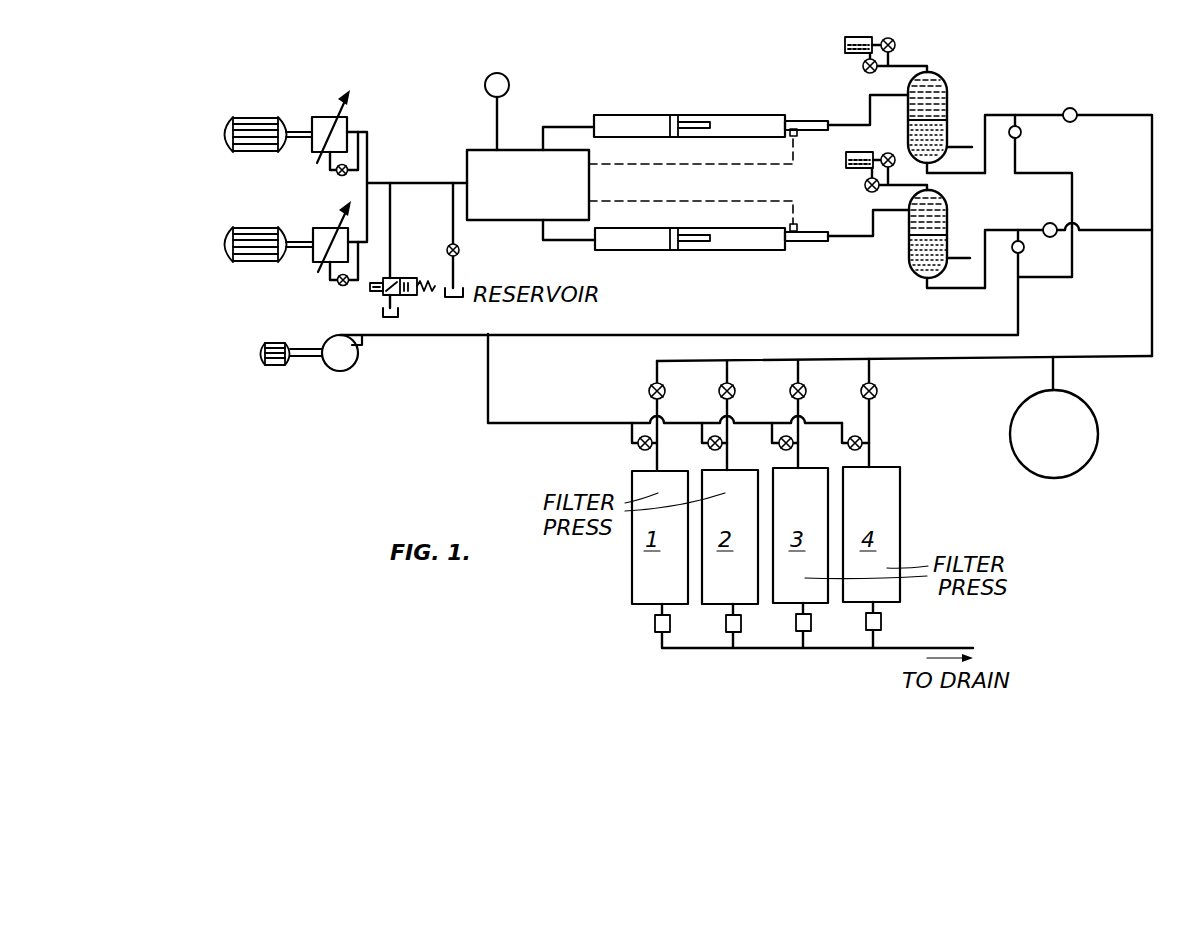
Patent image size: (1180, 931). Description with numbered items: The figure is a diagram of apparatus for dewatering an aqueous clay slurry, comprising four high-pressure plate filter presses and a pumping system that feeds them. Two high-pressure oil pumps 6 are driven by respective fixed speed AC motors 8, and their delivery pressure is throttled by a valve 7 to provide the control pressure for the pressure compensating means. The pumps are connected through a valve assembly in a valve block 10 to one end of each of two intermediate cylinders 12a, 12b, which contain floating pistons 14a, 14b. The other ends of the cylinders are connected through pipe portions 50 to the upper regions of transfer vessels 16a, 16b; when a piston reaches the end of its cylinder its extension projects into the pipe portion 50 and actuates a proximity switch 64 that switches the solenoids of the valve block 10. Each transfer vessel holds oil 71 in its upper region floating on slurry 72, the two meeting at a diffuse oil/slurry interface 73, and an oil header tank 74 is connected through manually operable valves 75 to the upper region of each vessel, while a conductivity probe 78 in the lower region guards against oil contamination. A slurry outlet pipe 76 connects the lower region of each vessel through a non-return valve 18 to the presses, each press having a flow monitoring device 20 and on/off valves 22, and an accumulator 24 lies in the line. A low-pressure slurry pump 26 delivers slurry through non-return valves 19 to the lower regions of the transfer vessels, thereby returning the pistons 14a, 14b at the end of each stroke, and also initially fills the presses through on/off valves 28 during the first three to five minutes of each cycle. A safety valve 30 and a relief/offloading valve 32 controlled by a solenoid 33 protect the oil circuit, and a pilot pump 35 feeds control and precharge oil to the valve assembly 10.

The high-pressure oil pump 6 is at (322, 116).
The throttling valve 7 is at (336, 175).
The fixed speed AC motor 8 is at (255, 140).
The valve block 10 is at (483, 152).
The intermediate cylinder 12a is at (655, 252).
The intermediate cylinder 12b is at (661, 137).
The floating piston 14a is at (678, 252).
The floating piston 14b is at (677, 133).
The transfer vessel 16a is at (942, 207).
The transfer vessel 16b is at (937, 75).
The non-return valve 18 is at (1075, 107).
The non-return valve 19 is at (1023, 131).
The flow monitoring device 20 is at (653, 624).
The on/off valve 22 is at (718, 396).
The accumulator 24 is at (1062, 487).
The low-pressure slurry pump 26 is at (352, 353).
The on/off valve 28 is at (638, 448).
The safety valve 30 is at (450, 246).
The relief/offloading valve 32 is at (413, 280).
The solenoid 33 is at (375, 295).
The pilot pump 35 is at (509, 86).
The pipe portion 50 is at (810, 129).
The proximity switch 64 is at (810, 120).
The oil 71 is at (933, 97).
The slurry 72 is at (910, 130).
The oil/slurry interface 73 is at (947, 117).
The oil header tank 74 is at (845, 45).
The manually operable valve 75 is at (897, 42).
The slurry outlet pipe 76 is at (987, 173).
The conductivity probe 78 is at (960, 147).